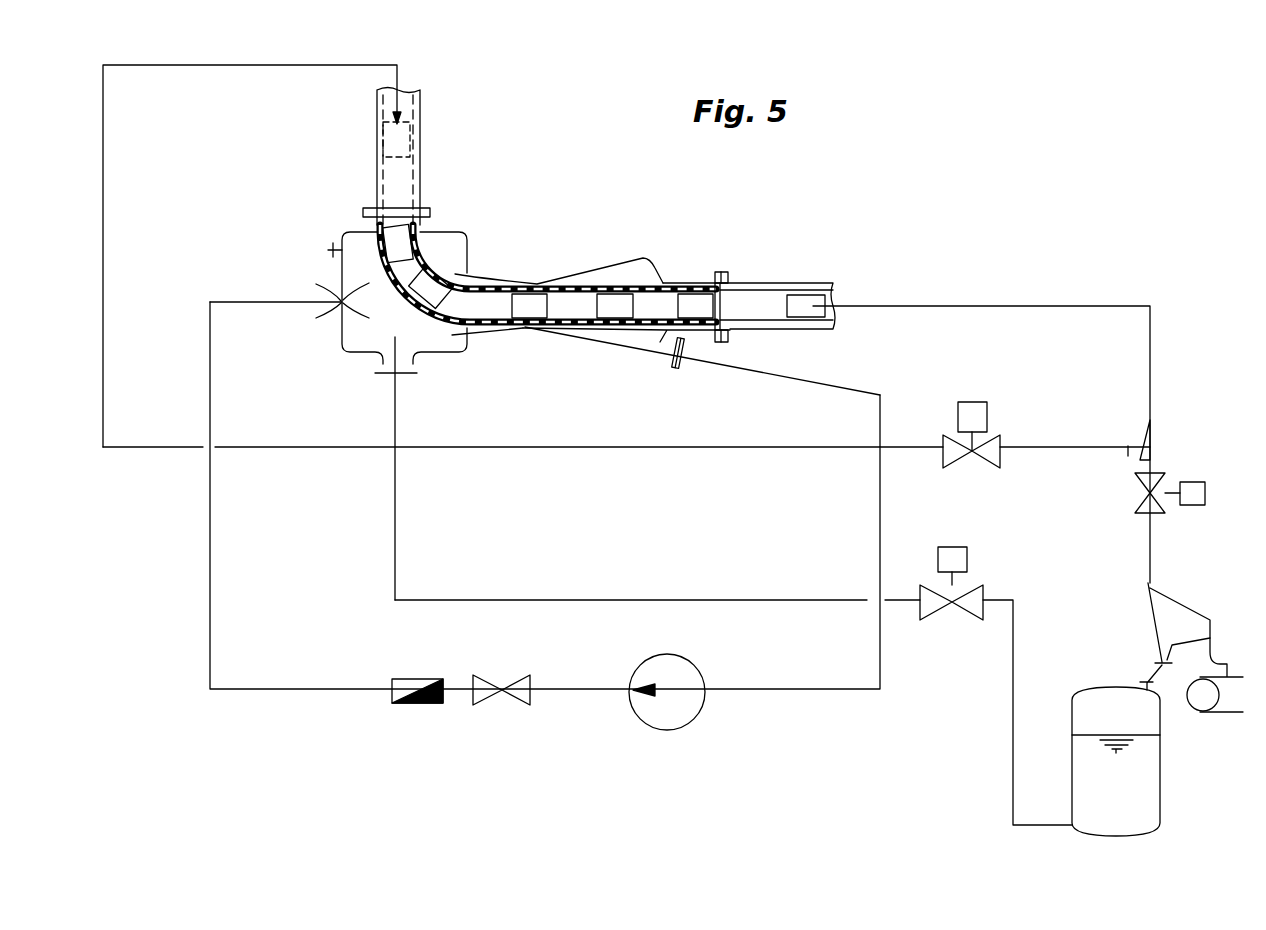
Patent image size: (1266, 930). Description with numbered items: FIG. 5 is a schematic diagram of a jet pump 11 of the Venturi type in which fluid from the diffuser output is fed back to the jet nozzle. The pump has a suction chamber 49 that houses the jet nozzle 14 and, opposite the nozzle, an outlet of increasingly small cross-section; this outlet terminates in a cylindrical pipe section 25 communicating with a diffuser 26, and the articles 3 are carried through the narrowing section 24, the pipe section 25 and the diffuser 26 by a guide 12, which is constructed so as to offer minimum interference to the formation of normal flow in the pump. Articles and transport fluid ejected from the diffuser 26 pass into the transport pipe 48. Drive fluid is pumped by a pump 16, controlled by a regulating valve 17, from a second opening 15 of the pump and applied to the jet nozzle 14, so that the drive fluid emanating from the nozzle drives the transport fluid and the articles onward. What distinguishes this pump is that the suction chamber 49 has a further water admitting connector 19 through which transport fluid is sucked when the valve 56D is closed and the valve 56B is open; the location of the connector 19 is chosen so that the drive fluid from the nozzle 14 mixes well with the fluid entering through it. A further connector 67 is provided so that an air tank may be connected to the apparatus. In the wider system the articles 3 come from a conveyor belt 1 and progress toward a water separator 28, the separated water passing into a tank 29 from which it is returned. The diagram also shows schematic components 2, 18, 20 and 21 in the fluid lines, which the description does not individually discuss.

The conveyor belt 1 is at (1218, 662).
The pump 2 is at (1203, 708).
The articles 3 is at (413, 140).
The jet pump 11 is at (490, 282).
The guide 12 is at (750, 283).
The jet nozzle 14 is at (337, 297).
The second opening 15 is at (655, 268).
The pump 16 is at (645, 672).
The regulating valve 17 is at (485, 689).
The filter 18 is at (412, 683).
The water admitting connector 19 is at (417, 373).
The check device 20 is at (1143, 440).
The control valve 21 is at (1148, 503).
The section 24 is at (478, 330).
The cylindrical pipe section 25 is at (527, 328).
The diffuser 26 is at (618, 348).
The water separator 28 is at (1173, 612).
The tank 29 is at (1150, 795).
The transport pipe 48 is at (822, 283).
The suction chamber 49 is at (343, 357).
The valve 56B is at (965, 558).
The valve 56D is at (993, 442).
The further connector 67 is at (332, 250).